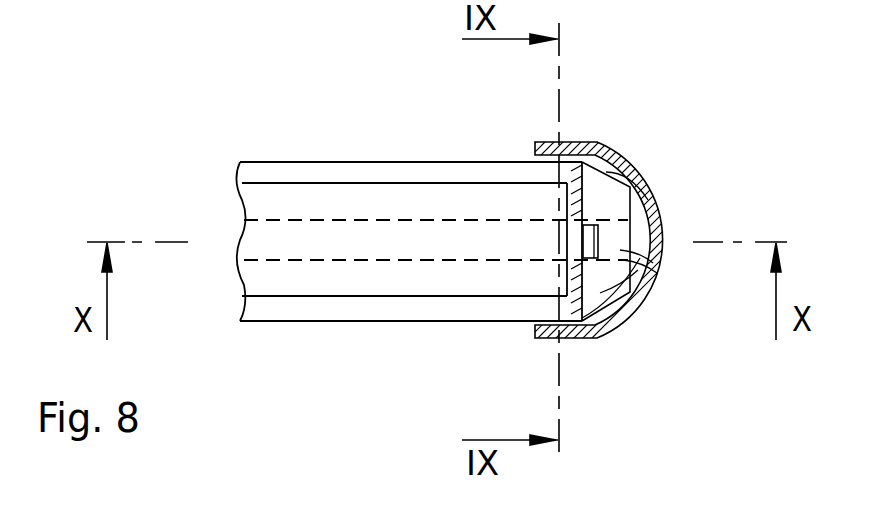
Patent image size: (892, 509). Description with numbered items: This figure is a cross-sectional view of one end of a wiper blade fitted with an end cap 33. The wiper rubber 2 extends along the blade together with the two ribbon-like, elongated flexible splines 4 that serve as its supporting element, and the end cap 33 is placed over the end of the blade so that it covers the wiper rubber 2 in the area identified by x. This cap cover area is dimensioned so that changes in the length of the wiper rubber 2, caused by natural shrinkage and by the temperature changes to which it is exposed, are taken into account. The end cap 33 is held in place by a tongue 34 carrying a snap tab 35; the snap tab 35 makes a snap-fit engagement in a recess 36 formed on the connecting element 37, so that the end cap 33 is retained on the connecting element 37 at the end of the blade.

The wiper rubber 2 is at (360, 232).
The flexible splines 4 is at (270, 174).
The end cap 33 is at (648, 173).
The tongue 34 is at (657, 268).
The snap tab 35 is at (590, 235).
The recess 36 is at (612, 305).
The connecting element 37 is at (600, 185).